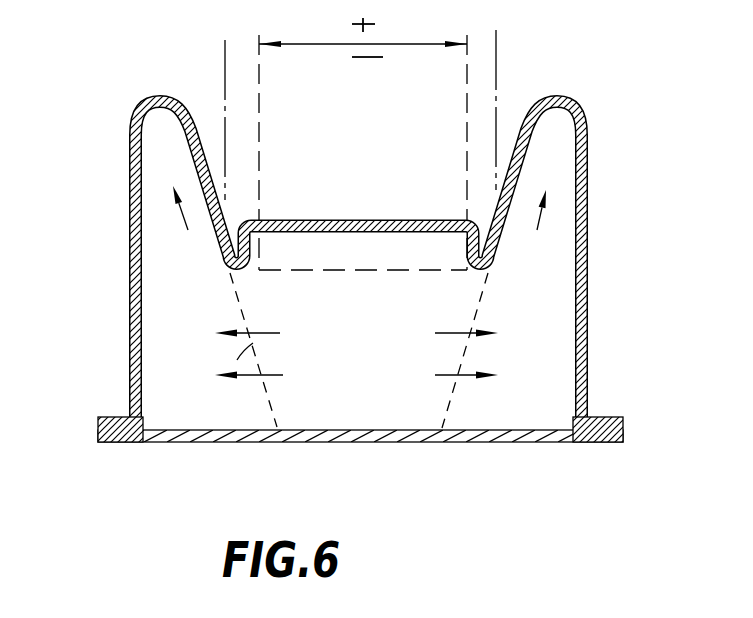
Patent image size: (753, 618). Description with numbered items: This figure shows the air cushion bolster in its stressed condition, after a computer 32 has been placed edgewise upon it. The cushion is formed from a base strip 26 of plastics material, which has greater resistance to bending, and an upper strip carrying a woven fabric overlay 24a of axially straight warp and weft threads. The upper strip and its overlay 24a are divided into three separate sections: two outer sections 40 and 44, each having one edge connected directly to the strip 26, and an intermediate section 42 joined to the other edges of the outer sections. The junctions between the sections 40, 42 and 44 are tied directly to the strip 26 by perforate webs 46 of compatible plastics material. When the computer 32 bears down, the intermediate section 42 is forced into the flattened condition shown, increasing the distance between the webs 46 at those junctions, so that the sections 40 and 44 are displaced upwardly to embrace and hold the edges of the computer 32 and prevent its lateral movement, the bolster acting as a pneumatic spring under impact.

The section 40 is at (160, 95).
The section 44 is at (576, 108).
The computer 32 is at (497, 86).
The woven fabric overlay 24a is at (320, 218).
The intermediate section 42 is at (344, 237).
The perforate webs 46 is at (230, 381).
The strip 26 is at (457, 433).